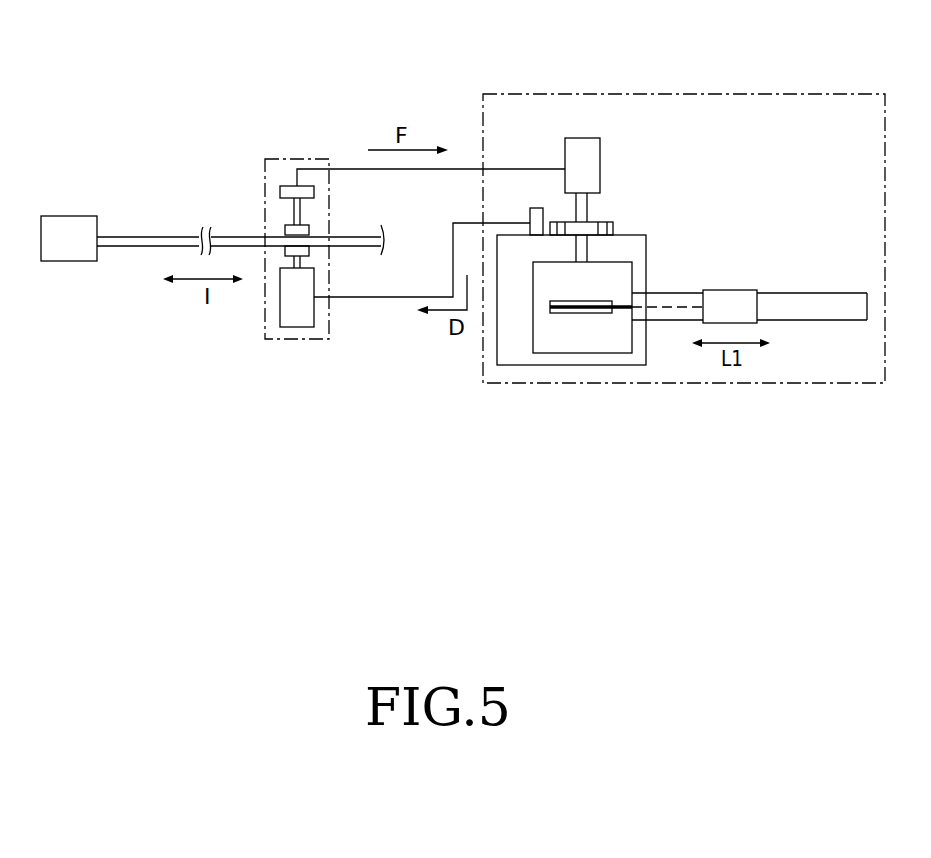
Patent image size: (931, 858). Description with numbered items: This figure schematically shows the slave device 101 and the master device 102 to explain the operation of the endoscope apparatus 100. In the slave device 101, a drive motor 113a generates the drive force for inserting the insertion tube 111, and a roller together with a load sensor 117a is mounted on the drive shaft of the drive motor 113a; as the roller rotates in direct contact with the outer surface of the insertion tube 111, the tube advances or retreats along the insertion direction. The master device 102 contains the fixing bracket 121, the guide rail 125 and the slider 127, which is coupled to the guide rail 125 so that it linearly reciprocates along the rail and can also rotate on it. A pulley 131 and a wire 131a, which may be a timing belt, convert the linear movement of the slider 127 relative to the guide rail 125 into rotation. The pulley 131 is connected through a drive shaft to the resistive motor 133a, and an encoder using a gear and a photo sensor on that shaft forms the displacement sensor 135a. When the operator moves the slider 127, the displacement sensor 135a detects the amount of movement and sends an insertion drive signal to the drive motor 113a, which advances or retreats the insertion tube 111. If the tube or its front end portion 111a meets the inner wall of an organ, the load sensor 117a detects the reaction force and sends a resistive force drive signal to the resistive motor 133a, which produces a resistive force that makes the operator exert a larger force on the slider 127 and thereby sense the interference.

The endoscope apparatus 100 is at (413, 29).
The slave device 101 is at (265, 322).
The master device 102 is at (723, 386).
The insertion tube 111 is at (143, 238).
The front end portion 111a is at (70, 224).
The drive motor 113a is at (296, 328).
The load sensor 117a is at (283, 185).
The fixing bracket 121 is at (505, 343).
The guide rail 125 is at (805, 295).
The slider 127 is at (730, 297).
The pulley 131 is at (570, 314).
The wire 131a is at (623, 308).
The resistive motor 133a is at (600, 168).
The displacement sensor 135a is at (534, 207).